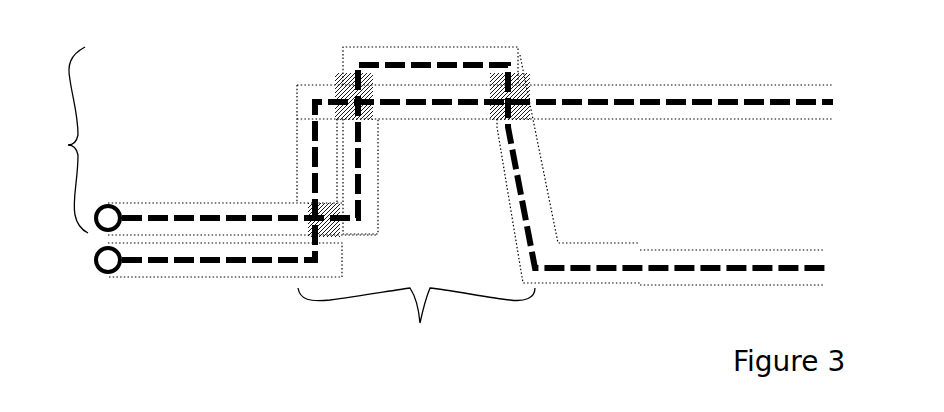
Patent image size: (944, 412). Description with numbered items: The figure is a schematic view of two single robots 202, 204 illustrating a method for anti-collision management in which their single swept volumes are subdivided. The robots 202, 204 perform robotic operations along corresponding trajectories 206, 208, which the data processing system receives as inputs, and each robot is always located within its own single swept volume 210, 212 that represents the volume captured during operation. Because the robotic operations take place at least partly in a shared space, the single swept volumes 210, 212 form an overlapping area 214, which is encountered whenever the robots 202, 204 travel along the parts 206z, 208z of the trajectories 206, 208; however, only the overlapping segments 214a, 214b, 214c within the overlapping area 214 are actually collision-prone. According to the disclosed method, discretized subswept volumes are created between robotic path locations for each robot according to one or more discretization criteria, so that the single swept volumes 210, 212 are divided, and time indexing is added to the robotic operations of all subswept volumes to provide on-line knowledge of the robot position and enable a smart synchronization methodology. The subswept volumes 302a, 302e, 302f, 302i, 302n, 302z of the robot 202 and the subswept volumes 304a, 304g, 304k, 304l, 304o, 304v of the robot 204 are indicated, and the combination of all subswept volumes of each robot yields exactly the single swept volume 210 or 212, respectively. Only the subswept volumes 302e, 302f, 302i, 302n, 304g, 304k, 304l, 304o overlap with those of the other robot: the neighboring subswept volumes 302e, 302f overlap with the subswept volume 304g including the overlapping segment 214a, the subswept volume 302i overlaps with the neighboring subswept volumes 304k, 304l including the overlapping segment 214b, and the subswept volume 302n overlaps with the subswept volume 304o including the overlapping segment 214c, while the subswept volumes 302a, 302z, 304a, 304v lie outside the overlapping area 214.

The robot 202 is at (113, 205).
The robot 204 is at (108, 274).
The trajectory 206 is at (834, 102).
The trajectory 208 is at (825, 268).
The single swept volume 210 is at (192, 203).
The single swept volume 212 is at (205, 278).
The overlapping area 214 is at (284, 199).
The overlapping segment 214a is at (340, 228).
The overlapping segment 214b is at (368, 112).
The overlapping segment 214c is at (518, 98).
The part of trajectory 206z is at (363, 192).
The part of trajectory 208z is at (467, 108).
The subswept volume 302a is at (134, 203).
The subswept volume 302e is at (275, 203).
The subswept volume 302f is at (378, 228).
The subswept volume 302i is at (342, 60).
The subswept volume 302n is at (521, 56).
The subswept volume 302z is at (800, 252).
The subswept volume 304a is at (127, 278).
The subswept volume 304g is at (300, 190).
The subswept volume 304k is at (348, 95).
The subswept volume 304l is at (372, 116).
The subswept volume 304o is at (535, 117).
The subswept volume 304v is at (810, 84).